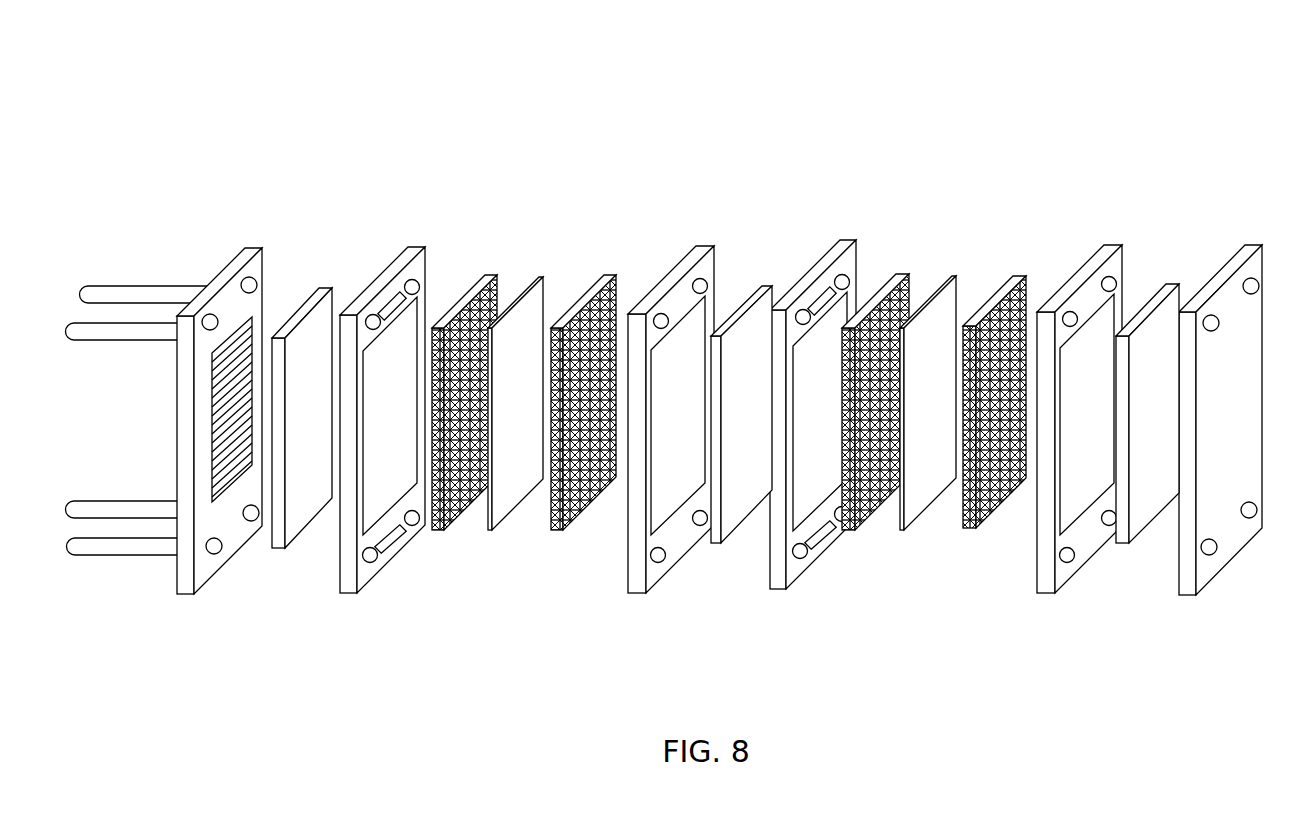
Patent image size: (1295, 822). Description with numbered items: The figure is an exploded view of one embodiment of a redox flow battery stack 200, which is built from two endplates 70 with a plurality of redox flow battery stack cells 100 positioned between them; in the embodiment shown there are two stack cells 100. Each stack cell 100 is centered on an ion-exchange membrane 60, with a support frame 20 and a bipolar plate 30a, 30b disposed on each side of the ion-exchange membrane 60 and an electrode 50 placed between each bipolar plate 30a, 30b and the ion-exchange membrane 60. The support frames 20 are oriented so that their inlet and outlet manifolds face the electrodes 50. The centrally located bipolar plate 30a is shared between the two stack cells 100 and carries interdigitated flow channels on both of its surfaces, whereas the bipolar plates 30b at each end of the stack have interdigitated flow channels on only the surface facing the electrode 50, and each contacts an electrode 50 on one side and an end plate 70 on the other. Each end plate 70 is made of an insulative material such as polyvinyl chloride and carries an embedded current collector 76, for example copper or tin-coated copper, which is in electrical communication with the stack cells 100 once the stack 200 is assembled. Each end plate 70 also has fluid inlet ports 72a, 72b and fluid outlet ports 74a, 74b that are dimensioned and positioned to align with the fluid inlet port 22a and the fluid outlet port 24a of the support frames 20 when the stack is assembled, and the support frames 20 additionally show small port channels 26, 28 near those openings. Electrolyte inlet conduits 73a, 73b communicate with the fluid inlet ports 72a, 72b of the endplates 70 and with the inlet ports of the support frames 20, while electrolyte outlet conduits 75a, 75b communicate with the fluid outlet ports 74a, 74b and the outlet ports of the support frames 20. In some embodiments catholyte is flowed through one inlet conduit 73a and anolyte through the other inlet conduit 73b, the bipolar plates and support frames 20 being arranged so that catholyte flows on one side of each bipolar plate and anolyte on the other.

The redox flow battery stack 200 is at (335, 80).
The redox flow battery stack cell 100 is at (748, 173).
The support frame 20 is at (392, 297).
The fluid inlet port 22a is at (371, 563).
The fluid outlet port 24a is at (411, 247).
The outlet port channel 26 is at (395, 542).
The inlet port channel 28 is at (385, 302).
The bipolar plate 30a is at (750, 506).
The bipolar plate 30b is at (304, 524).
The electrode 50 is at (437, 533).
The ion-exchange membrane 60 is at (493, 532).
The end plate 70 is at (184, 597).
The fluid inlet port 72a is at (215, 554).
The fluid inlet port 72b is at (251, 521).
The fluid outlet port 74a is at (249, 277).
The fluid outlet port 74b is at (211, 313).
The electrolyte inlet conduit 73a is at (89, 556).
The electrolyte inlet conduit 73b is at (87, 501).
The electrolyte outlet conduit 75a is at (109, 286).
The electrolyte outlet conduit 75b is at (95, 341).
The current collector 76 is at (212, 392).